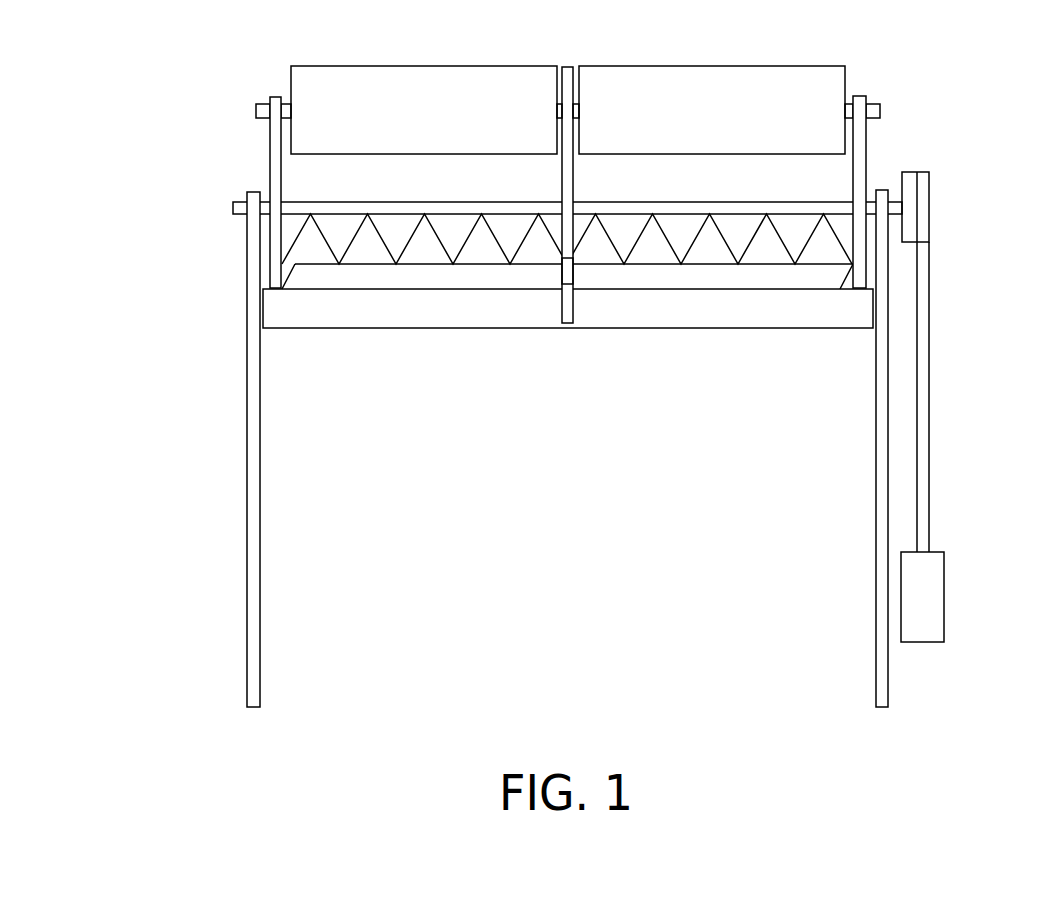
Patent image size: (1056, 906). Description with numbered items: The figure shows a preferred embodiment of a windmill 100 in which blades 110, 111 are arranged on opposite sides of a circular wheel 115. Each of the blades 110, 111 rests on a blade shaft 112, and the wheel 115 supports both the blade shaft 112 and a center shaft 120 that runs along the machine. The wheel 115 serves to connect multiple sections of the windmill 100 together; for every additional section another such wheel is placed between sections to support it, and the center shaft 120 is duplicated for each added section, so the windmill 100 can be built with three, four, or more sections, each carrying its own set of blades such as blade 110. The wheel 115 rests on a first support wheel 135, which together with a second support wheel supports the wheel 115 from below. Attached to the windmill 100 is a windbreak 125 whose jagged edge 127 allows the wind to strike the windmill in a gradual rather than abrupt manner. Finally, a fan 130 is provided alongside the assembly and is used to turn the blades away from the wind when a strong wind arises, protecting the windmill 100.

The windmill 100 is at (118, 124).
The blade 110 is at (417, 88).
The blade 111 is at (728, 88).
The blade shaft 112 is at (580, 110).
The circular wheel 115 is at (572, 72).
The center shaft 120 is at (832, 202).
The windbreak 125 is at (780, 312).
The jagged edge 127 is at (827, 247).
The fan 130 is at (927, 507).
The first support wheel 135 is at (567, 274).